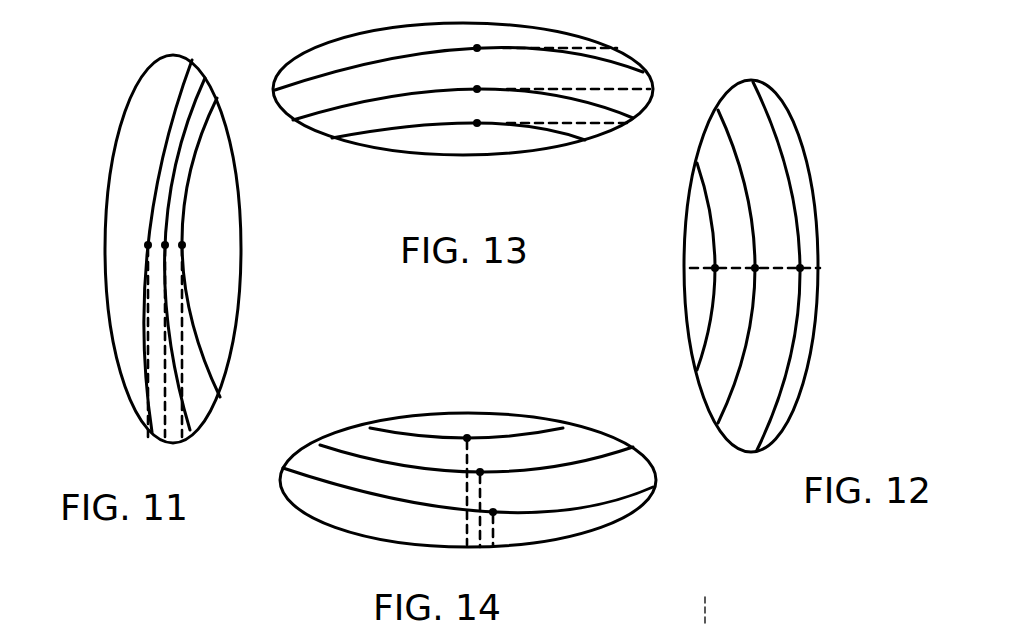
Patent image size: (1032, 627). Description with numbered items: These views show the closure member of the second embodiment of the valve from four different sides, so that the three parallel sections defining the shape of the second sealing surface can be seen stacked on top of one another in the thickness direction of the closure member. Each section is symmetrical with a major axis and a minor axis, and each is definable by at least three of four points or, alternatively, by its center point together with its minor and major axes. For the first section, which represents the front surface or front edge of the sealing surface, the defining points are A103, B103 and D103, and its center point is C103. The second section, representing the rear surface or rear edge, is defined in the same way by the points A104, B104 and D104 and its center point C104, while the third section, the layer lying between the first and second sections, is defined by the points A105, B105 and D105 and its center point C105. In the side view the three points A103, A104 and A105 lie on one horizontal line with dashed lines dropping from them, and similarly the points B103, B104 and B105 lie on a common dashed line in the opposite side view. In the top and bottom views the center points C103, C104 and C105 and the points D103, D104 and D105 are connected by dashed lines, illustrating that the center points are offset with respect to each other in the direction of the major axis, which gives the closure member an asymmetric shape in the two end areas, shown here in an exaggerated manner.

In FIG. 11, the point A of the first section A103 is at (195, 243).
In FIG. 11, the point A of the second section A104 is at (140, 243).
In FIG. 11, the point A of the third section A105 is at (167, 252).
In FIG. 12, the point B of the first section B103 is at (711, 262).
In FIG. 12, the point B of the second section B104 is at (814, 265).
In FIG. 12, the point B of the third section B105 is at (748, 273).
In FIG. 13, the center point of the first section C103 is at (478, 133).
In FIG. 13, the center point of the second section C104 is at (455, 40).
In FIG. 13, the center point of the third section C105 is at (477, 96).
In FIG. 14, the point D of the first section D103 is at (452, 425).
In FIG. 14, the point D of the second section D104 is at (502, 514).
In FIG. 14, the point D of the third section D105 is at (481, 463).